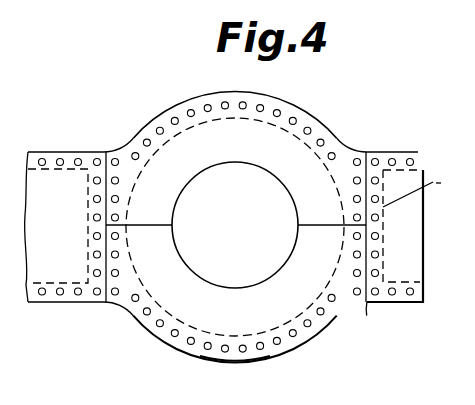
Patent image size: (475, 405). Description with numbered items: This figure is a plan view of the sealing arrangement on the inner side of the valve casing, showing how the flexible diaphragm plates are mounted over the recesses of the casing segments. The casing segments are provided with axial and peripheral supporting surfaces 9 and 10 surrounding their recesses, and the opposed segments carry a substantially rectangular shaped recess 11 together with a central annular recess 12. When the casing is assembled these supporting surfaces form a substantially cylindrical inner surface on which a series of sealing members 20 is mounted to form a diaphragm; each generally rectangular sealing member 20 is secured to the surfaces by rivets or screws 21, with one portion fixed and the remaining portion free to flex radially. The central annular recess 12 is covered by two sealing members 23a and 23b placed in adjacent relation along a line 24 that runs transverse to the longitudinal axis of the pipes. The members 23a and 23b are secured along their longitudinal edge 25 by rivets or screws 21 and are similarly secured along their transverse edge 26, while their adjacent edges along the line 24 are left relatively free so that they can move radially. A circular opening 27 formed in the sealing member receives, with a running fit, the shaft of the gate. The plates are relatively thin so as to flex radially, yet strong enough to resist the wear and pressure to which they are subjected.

The axial supporting surface 9 is at (379, 225).
The peripheral supporting surface 10 is at (402, 284).
The rectangular shaped recess 11 is at (60, 169).
The central annular recess 12 is at (181, 128).
The sealing member 20 is at (38, 268).
The rivets or screws 21 is at (230, 103).
The sealing member 23a is at (279, 157).
The sealing member 23b is at (298, 290).
The line 24 is at (153, 229).
The longitudinal edge 25 is at (116, 258).
The transverse edge 26 is at (237, 352).
The circular opening 27 is at (216, 285).